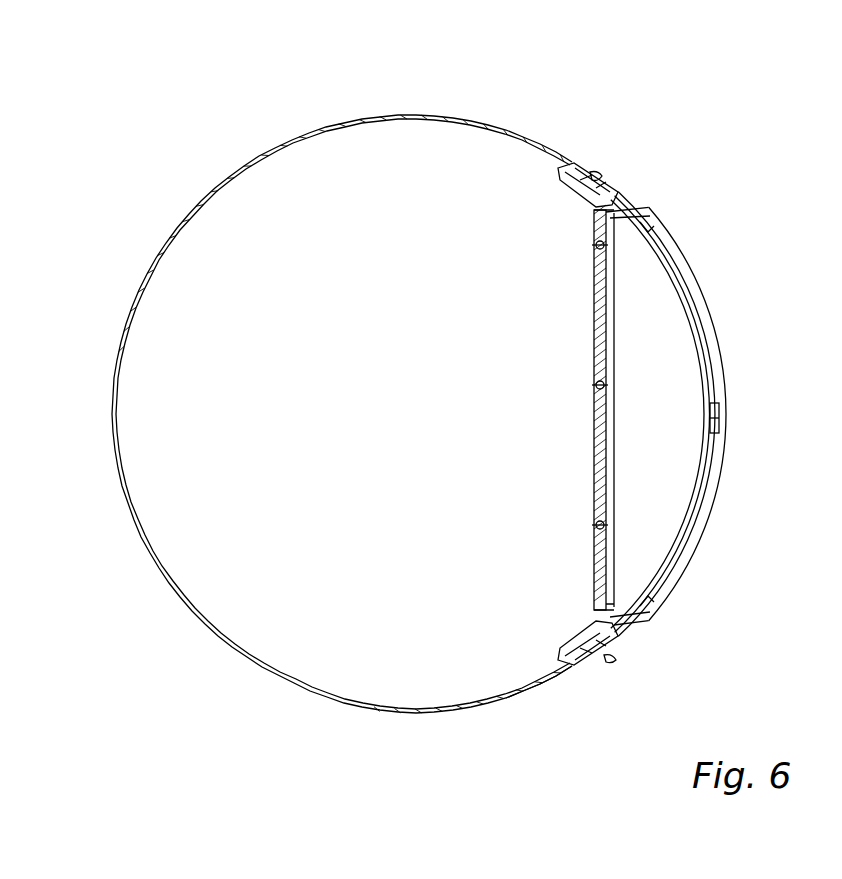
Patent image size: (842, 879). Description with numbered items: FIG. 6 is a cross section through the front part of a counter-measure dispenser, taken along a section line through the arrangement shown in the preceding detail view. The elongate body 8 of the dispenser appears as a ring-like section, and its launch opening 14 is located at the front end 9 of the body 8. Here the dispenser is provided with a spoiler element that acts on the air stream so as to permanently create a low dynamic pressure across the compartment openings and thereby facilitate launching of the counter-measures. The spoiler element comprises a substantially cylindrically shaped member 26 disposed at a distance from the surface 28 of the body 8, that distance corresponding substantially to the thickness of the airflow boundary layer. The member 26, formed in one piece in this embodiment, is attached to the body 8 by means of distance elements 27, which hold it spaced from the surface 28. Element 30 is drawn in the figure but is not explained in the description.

The elongate body 8 is at (557, 162).
The front end 9 is at (528, 112).
The launch opening 14 is at (665, 530).
The substantially cylindrically shaped member 26 is at (765, 348).
The distance elements 27 is at (718, 410).
The surface 28 is at (553, 690).
The bracket 30 is at (582, 208).